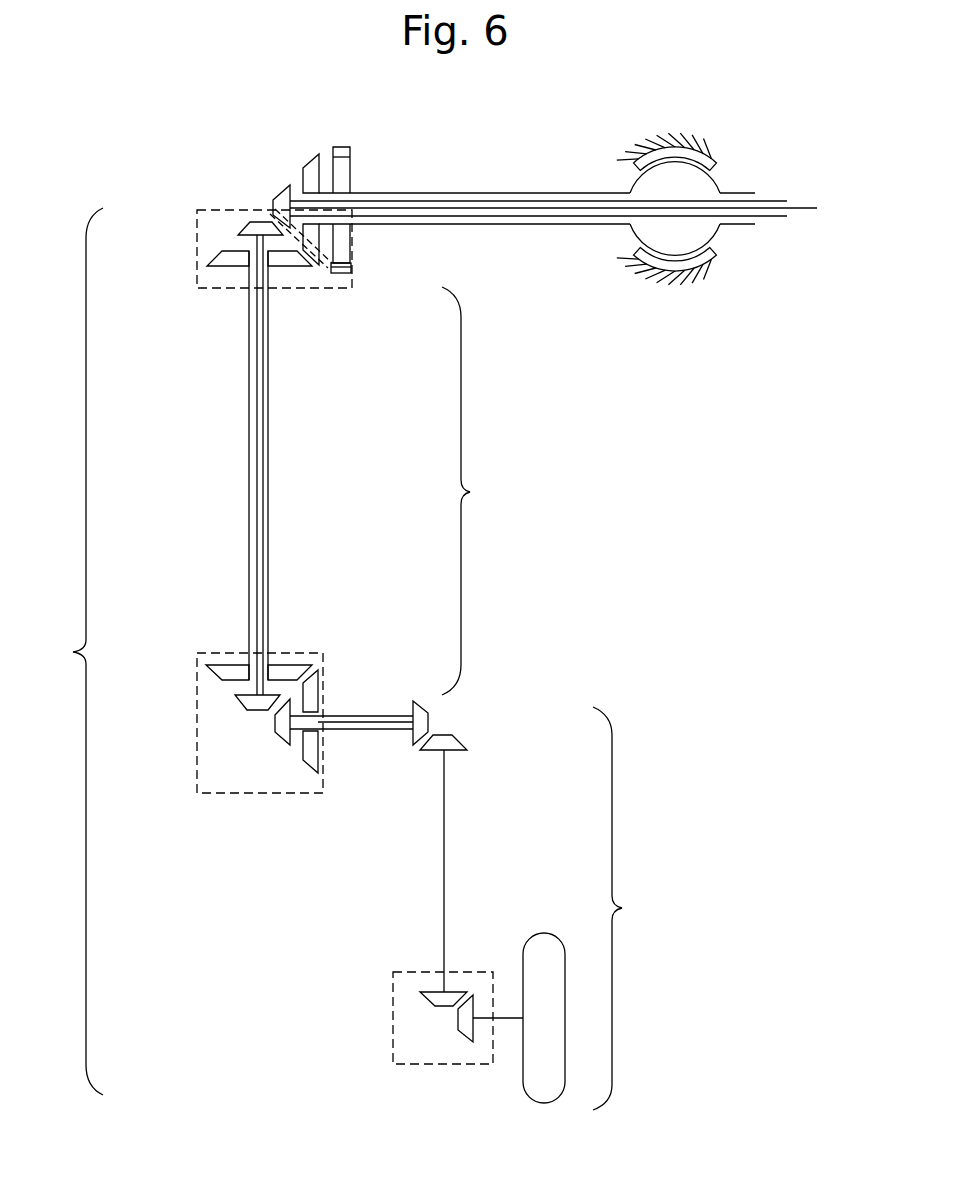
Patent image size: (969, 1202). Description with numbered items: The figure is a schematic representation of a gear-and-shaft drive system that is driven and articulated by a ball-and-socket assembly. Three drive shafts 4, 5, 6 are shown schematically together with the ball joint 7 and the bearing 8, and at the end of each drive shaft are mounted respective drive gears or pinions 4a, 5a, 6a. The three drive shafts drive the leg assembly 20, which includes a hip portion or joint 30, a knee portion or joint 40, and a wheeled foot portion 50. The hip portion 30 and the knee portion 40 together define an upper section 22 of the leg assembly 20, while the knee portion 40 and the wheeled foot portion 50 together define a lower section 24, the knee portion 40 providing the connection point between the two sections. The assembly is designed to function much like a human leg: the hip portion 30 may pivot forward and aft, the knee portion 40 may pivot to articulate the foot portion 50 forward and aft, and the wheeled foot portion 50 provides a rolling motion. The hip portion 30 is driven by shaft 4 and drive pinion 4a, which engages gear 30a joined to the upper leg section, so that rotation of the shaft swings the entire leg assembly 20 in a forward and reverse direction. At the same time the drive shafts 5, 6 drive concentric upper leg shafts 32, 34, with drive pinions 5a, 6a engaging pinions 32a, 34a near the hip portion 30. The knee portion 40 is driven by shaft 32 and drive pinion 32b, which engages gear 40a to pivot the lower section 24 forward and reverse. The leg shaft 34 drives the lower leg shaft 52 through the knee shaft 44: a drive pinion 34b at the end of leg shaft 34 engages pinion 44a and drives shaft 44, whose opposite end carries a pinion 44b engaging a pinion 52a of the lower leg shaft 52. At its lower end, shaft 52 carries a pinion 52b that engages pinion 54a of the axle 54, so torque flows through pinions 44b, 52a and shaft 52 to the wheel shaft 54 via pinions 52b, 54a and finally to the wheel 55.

The drive shaft 4 is at (432, 192).
The drive pinion 4a is at (342, 147).
The drive shaft 5 is at (777, 200).
The drive pinion 5a is at (312, 166).
The drive shaft 6 is at (812, 207).
The drive pinion 6a is at (279, 200).
The ball joint 7 is at (630, 182).
The bearing 8 is at (704, 144).
The leg assembly 20 is at (73, 651).
The upper section 22 is at (473, 491).
The lower section 24 is at (624, 908).
The hip portion 30 is at (263, 270).
The gear 30a is at (352, 290).
The upper leg shaft 32 is at (268, 417).
The pinion 32a is at (226, 253).
The drive pinion 32b is at (285, 667).
The leg shaft 34 is at (260, 379).
The pinion 34a is at (249, 222).
The drive pinion 34b is at (240, 698).
The knee portion 40 is at (224, 751).
The gear 40a is at (305, 773).
The knee shaft 44 is at (363, 724).
The pinion 44a is at (282, 737).
The pinion 44b is at (425, 700).
The wheeled foot portion 50 is at (393, 1038).
The lower leg shaft 52 is at (445, 831).
The pinion 52a is at (456, 738).
The pinion 52b is at (421, 997).
The axle 54 is at (510, 1016).
The pinion 54a is at (463, 1040).
The wheel 55 is at (543, 1094).